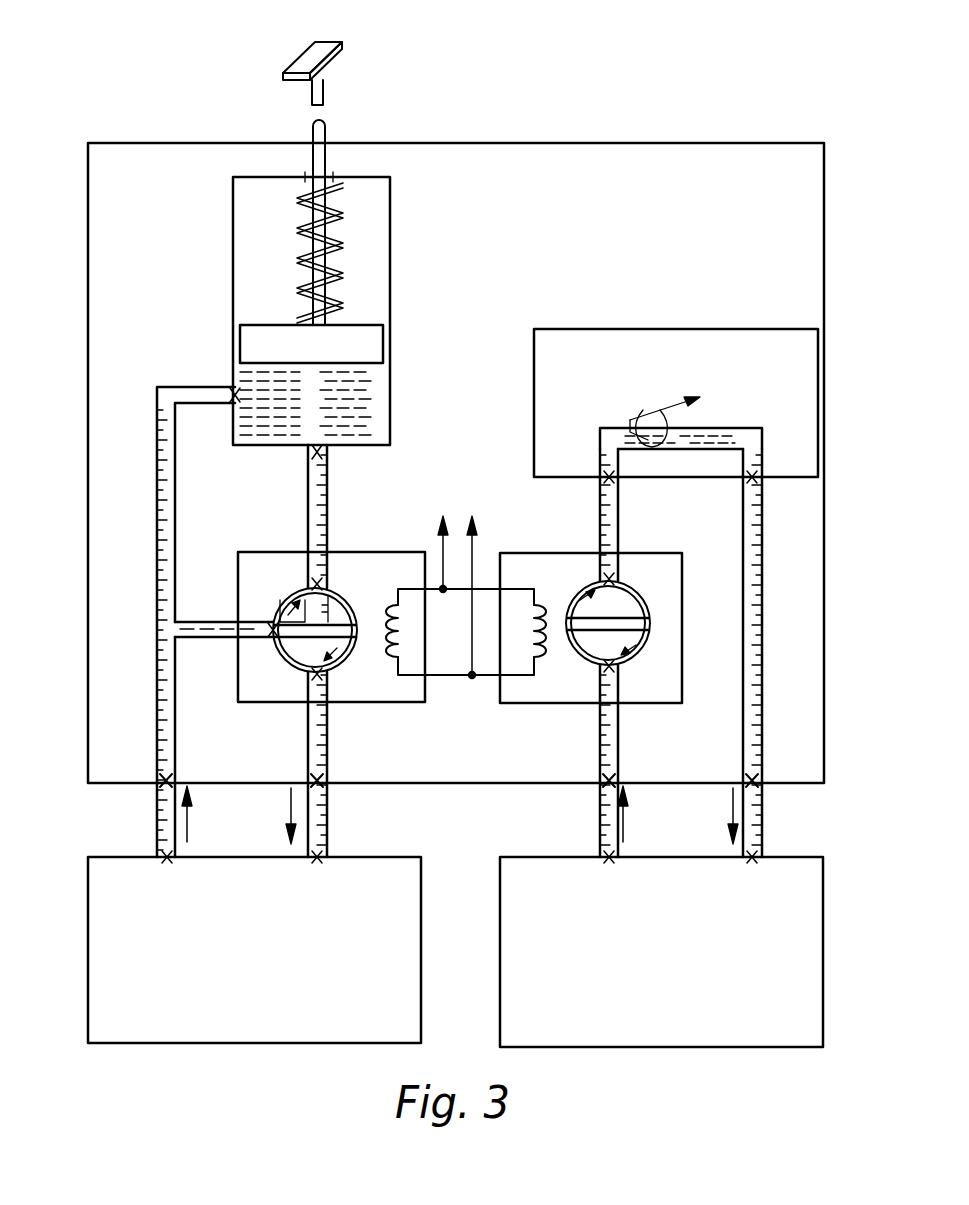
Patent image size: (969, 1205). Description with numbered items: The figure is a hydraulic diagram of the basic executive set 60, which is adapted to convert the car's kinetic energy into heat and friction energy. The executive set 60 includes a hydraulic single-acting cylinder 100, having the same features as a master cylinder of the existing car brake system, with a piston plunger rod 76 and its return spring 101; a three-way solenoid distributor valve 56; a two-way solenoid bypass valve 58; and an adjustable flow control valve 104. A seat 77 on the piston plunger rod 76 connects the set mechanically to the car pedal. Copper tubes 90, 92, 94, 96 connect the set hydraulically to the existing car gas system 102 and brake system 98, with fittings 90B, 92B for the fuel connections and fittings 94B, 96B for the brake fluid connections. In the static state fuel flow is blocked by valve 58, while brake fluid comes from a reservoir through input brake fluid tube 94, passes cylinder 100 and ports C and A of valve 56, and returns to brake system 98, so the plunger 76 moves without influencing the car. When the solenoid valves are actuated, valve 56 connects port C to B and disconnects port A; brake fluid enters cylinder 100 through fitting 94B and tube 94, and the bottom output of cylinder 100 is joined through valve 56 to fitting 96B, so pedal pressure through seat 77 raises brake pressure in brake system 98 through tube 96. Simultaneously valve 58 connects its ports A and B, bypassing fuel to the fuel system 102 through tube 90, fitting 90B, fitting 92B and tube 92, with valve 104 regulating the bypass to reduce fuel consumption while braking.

The executive set 60 is at (745, 143).
The seat 77 is at (318, 57).
The piston plunger rod 76 is at (323, 92).
The hydraulic single-acting cylinder 100 is at (370, 285).
The return spring 101 is at (345, 218).
The adjustable flow control valve 104 is at (630, 329).
The 3-way solenoid distributor valve 56 is at (388, 552).
The 2-way solenoid bypass valve 58 is at (633, 553).
The input brake fluid tube 94 is at (157, 832).
The fitting 94B is at (160, 780).
The tube 96 is at (327, 832).
The fitting 96B is at (320, 780).
The brake system 98 is at (262, 857).
The tube 90 is at (600, 832).
The fitting 90B is at (605, 780).
The tube 92 is at (762, 832).
The fitting 92B is at (758, 780).
The gas system 102 is at (700, 857).